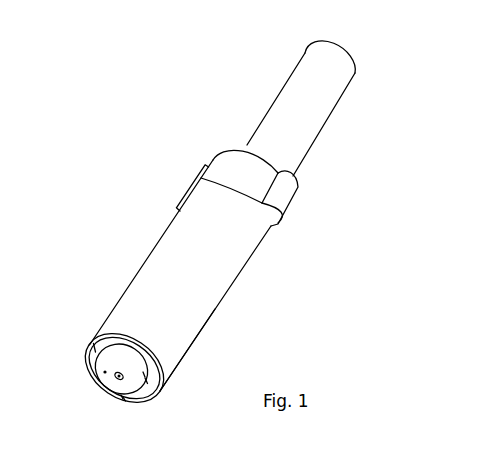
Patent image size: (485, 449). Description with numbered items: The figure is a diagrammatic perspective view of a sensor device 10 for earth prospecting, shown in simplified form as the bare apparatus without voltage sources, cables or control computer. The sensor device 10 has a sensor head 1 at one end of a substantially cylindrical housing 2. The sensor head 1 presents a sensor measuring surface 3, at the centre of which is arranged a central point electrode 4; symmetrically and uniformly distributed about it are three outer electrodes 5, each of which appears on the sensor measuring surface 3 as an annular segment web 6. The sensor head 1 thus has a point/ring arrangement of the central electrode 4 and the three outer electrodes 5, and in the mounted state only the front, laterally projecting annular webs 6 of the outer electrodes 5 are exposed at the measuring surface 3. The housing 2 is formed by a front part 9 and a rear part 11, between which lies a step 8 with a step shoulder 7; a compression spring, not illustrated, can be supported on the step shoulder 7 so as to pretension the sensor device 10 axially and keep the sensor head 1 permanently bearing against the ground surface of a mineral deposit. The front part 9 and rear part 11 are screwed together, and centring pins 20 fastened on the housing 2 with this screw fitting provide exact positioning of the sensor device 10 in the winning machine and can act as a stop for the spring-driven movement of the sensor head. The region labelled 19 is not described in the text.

The sensor head 1 is at (91, 406).
The cylindrical housing 2 is at (154, 207).
The sensor measuring surface 3 is at (93, 378).
The central point electrode 4 is at (116, 374).
The outer electrodes 5 is at (138, 321).
The annular segment webs 6 is at (90, 362).
The step shoulder 7 is at (249, 151).
The step 8 is at (321, 178).
The front part 9 is at (248, 250).
The sensor device 10 is at (283, 305).
The rear part 11 is at (313, 120).
The rim edge 19 is at (158, 373).
The centring pins 20 is at (285, 195).